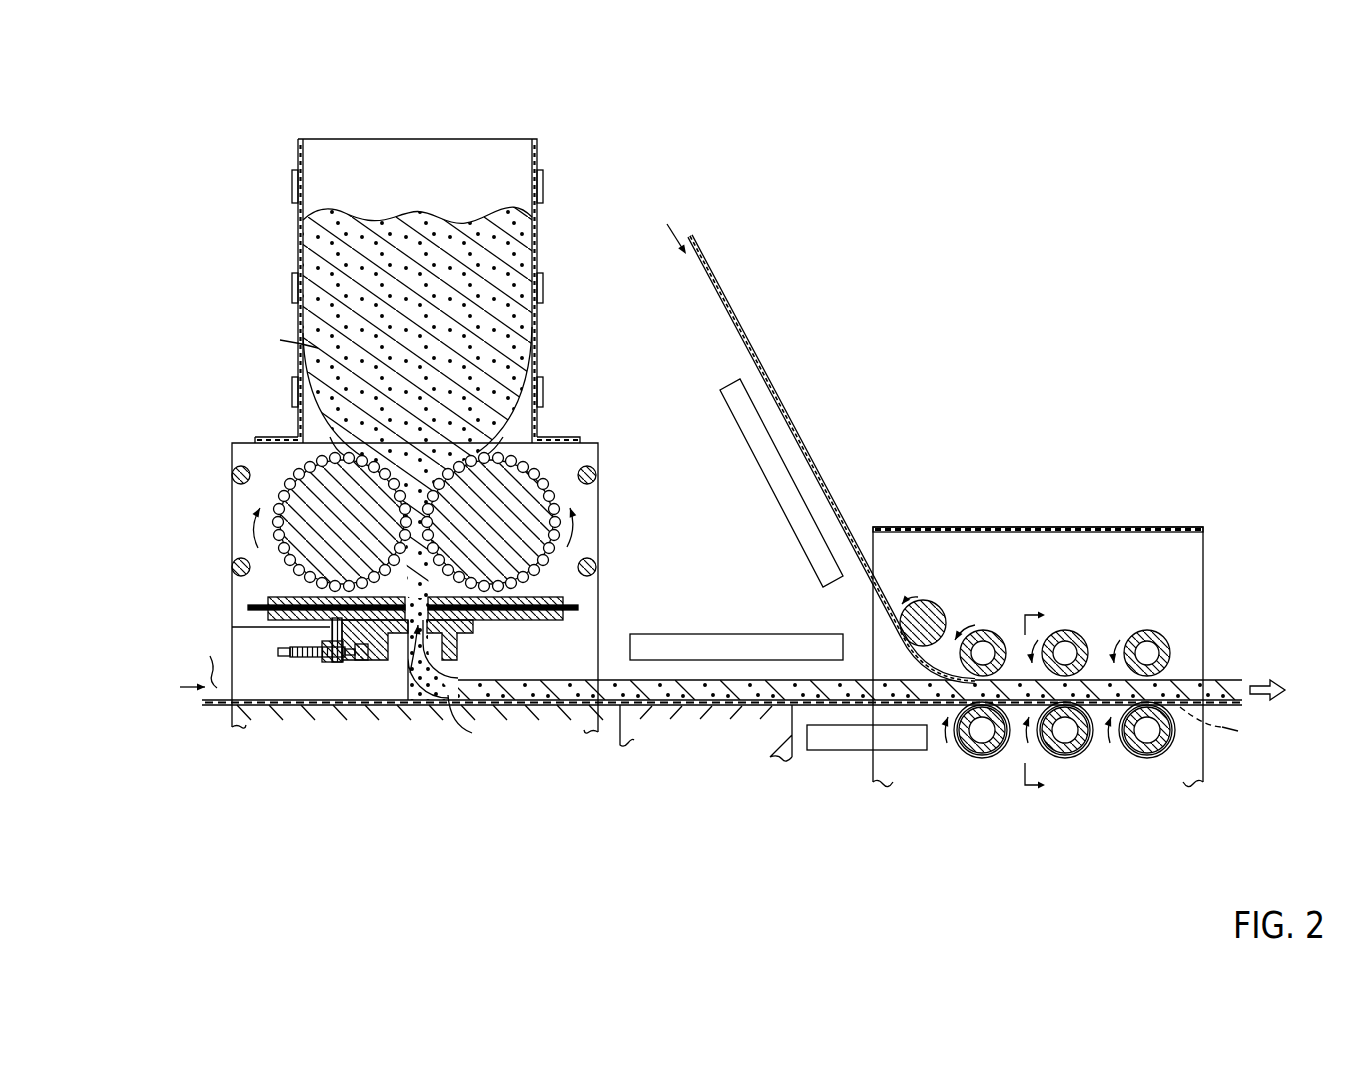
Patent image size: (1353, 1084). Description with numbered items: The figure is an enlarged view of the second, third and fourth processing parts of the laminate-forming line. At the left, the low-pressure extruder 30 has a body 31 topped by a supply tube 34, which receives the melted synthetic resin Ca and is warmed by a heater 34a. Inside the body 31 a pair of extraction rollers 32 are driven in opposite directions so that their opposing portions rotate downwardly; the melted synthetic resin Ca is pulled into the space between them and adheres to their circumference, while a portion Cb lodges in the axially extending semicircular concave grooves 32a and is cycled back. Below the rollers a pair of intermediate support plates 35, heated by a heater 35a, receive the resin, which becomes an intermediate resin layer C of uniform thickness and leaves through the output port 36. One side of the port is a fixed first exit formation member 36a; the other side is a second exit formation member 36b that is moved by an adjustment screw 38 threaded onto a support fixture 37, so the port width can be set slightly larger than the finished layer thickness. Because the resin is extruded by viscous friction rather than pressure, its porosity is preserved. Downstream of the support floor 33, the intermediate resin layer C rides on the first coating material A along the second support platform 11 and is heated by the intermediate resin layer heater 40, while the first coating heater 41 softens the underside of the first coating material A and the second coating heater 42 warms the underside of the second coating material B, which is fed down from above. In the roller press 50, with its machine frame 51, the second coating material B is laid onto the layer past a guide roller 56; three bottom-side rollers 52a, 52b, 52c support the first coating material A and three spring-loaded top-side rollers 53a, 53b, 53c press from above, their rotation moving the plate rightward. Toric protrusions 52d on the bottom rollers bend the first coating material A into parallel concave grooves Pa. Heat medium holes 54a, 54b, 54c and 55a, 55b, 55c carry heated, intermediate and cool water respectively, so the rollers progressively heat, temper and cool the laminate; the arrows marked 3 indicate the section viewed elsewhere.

The low-pressure extruder 30 is at (436, 283).
The supply tube 34 is at (538, 230).
The heater 34a is at (543, 291).
The extraction rollers 32 is at (418, 519).
The concave grooves 32a is at (610, 556).
The body 31 is at (596, 496).
The intermediate support plates 35 is at (408, 615).
The heater 35a is at (258, 604).
The output port 36 is at (433, 677).
The first exit formation member 36a is at (458, 648).
The second exit formation member 36b is at (403, 645).
The support fixture 37 is at (340, 662).
The adjustment screw 38 is at (306, 660).
The support floor 33 is at (327, 716).
The second support platform 11 is at (699, 730).
The intermediate resin layer heater 40 is at (731, 633).
The first coating heater 41 is at (845, 738).
The second coating heater 42 is at (755, 441).
The roller press 50 is at (1069, 648).
The machine frame 51 is at (980, 527).
The bottom-side roller 52a is at (978, 750).
The bottom-side roller 52b is at (1063, 750).
The bottom-side roller 52c is at (1150, 743).
The toric protrusions 52d is at (993, 757).
The top-side roller 53a is at (1003, 630).
The top-side roller 53b is at (1067, 630).
The top-side roller 53c is at (1145, 632).
The heat medium hole 54a is at (975, 737).
The heat medium hole 54b is at (1070, 731).
The heat medium hole 54c is at (1150, 730).
The heat medium hole 55a is at (983, 653).
The heat medium hole 55b is at (1068, 653).
The heat medium hole 55c is at (1150, 653).
The guide roller 56 is at (935, 605).
The first coating material A is at (198, 665).
The second coating material B is at (725, 294).
The intermediate resin layer C is at (466, 725).
The melted synthetic resin Ca is at (284, 337).
The portion of melted synthetic resin Cb is at (417, 436).
The concave grooves Pa is at (1223, 725).
The section line 3 is at (1043, 700).